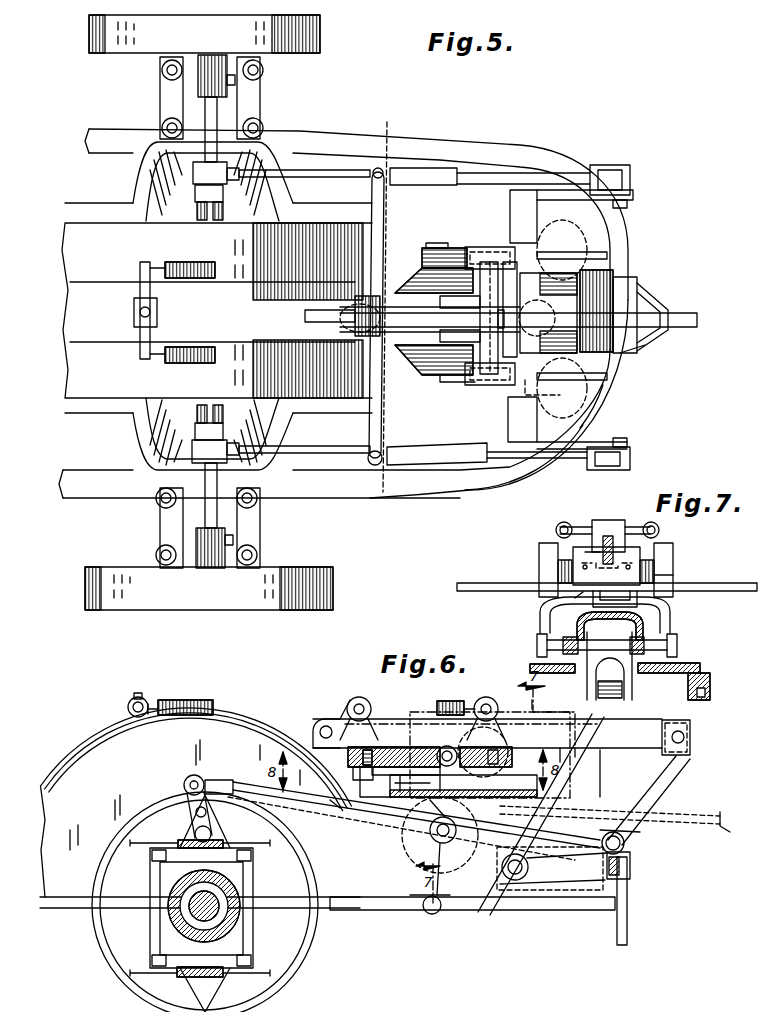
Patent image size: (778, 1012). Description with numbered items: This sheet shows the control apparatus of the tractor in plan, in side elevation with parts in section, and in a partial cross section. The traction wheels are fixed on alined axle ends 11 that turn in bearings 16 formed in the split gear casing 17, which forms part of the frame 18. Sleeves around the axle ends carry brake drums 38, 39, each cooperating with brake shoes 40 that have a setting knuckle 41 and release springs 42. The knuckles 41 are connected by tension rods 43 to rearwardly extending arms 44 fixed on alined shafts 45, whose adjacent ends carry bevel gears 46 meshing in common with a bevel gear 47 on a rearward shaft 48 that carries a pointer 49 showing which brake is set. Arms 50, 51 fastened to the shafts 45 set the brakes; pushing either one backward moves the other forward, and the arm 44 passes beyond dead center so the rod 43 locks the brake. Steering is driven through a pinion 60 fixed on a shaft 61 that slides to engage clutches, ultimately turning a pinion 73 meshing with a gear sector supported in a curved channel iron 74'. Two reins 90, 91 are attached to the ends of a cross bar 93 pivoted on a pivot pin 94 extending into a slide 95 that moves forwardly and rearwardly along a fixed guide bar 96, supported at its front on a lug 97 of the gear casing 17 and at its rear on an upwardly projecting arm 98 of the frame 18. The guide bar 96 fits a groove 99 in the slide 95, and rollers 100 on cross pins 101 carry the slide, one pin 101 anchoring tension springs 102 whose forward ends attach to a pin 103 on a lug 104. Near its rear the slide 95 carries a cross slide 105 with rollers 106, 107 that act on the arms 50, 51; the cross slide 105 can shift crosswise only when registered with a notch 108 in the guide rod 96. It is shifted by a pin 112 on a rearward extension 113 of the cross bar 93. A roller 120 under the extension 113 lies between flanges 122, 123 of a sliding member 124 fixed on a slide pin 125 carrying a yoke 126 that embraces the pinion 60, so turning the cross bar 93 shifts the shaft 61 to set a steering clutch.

In FIG. 6, the axle ends 11 is at (180, 917).
In FIG. 5, the bearings 16 is at (258, 104).
In FIG. 6, the bearings 16 is at (236, 942).
In FIG. 5, the gear casing 17 is at (63, 367).
In FIG. 7, the gear casing 17 is at (702, 682).
In FIG. 6, the gear casing 17 is at (100, 752).
In FIG. 5, the frame 18 is at (410, 494).
In FIG. 5, the brake drum 38 is at (209, 588).
In FIG. 5, the brake drum 39 is at (204, 34).
In FIG. 6, the brake shoes 40 is at (313, 943).
In FIG. 6, the setting knuckle 41 is at (186, 800).
In FIG. 6, the springs 42 is at (172, 850).
In FIG. 5, the tension rods 43 is at (317, 170).
In FIG. 6, the tension rods 43 is at (330, 808).
In FIG. 5, the arms 44 is at (632, 182).
In FIG. 6, the arms 44 is at (568, 885).
In FIG. 5, the shafts 45 is at (521, 188).
In FIG. 6, the shafts 45 is at (514, 882).
In FIG. 5, the bevel gears 46 is at (547, 397).
In FIG. 5, the bevel gear 47 is at (588, 253).
In FIG. 6, the shaft 48 is at (632, 868).
In FIG. 5, the pointer 49 is at (652, 301).
In FIG. 6, the pointer 49 is at (628, 916).
In FIG. 5, the arm 50 is at (610, 378).
In FIG. 6, the arm 50 is at (580, 769).
In FIG. 5, the arm 51 is at (607, 254).
In FIG. 6, the pinion 60 is at (600, 715).
In FIG. 6, the shaft 61 is at (432, 915).
In FIG. 5, the pinion 73 is at (615, 222).
In FIG. 5, the curved channel iron 74' is at (626, 406).
In FIG. 5, the rein 90 is at (456, 457).
In FIG. 6, the rein 90 is at (708, 830).
In FIG. 5, the rein 91 is at (426, 166).
In FIG. 5, the cross bar 93 is at (372, 187).
In FIG. 7, the cross bar 93 is at (482, 595).
In FIG. 6, the cross bar 93 is at (300, 808).
In FIG. 6, the pivot pin 94 is at (352, 812).
In FIG. 5, the slide 95 is at (416, 352).
In FIG. 7, the slide 95 is at (641, 560).
In FIG. 6, the slide 95 is at (388, 745).
In FIG. 5, the guide bar 96 is at (698, 320).
In FIG. 7, the guide bar 96 is at (610, 540).
In FIG. 6, the guide bar 96 is at (673, 720).
In FIG. 5, the lug 97 is at (328, 316).
In FIG. 6, the lug 97 is at (318, 719).
In FIG. 5, the arm 98 is at (652, 340).
In FIG. 6, the arm 98 is at (668, 790).
In FIG. 5, the groove 99 is at (398, 296).
In FIG. 7, the groove 99 is at (600, 548).
In FIG. 6, the groove 99 is at (402, 747).
In FIG. 5, the rollers 100 is at (337, 332).
In FIG. 6, the rollers 100 is at (352, 705).
In FIG. 5, the cross pins 101 is at (468, 390).
In FIG. 7, the cross pins 101 is at (660, 530).
In FIG. 6, the cross pins 101 is at (362, 698).
In FIG. 5, the tension springs 102 is at (190, 347).
In FIG. 7, the tension springs 102 is at (556, 530).
In FIG. 6, the tension springs 102 is at (195, 700).
In FIG. 5, the pin 103 is at (139, 271).
In FIG. 6, the pin 103 is at (128, 704).
In FIG. 5, the lug 104 is at (134, 310).
In FIG. 6, the lug 104 is at (142, 699).
In FIG. 5, the cross slide 105 is at (443, 393).
In FIG. 7, the cross slide 105 is at (674, 582).
In FIG. 6, the cross slide 105 is at (500, 760).
In FIG. 5, the roller 106 is at (488, 386).
In FIG. 7, the roller 106 is at (540, 564).
In FIG. 5, the roller 107 is at (490, 247).
In FIG. 7, the roller 107 is at (674, 565).
In FIG. 6, the roller 107 is at (575, 812).
In FIG. 6, the notch 108 is at (490, 740).
In FIG. 7, the pin 112 is at (578, 601).
In FIG. 6, the pin 112 is at (515, 742).
In FIG. 6, the rearward extension 113 is at (500, 797).
In FIG. 5, the roller 120 is at (440, 364).
In FIG. 7, the roller 120 is at (632, 677).
In FIG. 6, the roller 120 is at (400, 800).
In FIG. 5, the flange 122 is at (605, 356).
In FIG. 7, the flange 122 is at (553, 624).
In FIG. 5, the flange 123 is at (577, 288).
In FIG. 7, the flange 123 is at (637, 602).
In FIG. 6, the flange 123 is at (452, 840).
In FIG. 5, the sliding member 124 is at (455, 247).
In FIG. 7, the sliding member 124 is at (670, 640).
In FIG. 6, the sliding member 124 is at (430, 820).
In FIG. 5, the slide pin 125 is at (440, 243).
In FIG. 7, the slide pin 125 is at (678, 654).
In FIG. 6, the slide pin 125 is at (448, 846).
In FIG. 7, the yoke 126 is at (594, 676).
In FIG. 6, the yoke 126 is at (410, 915).